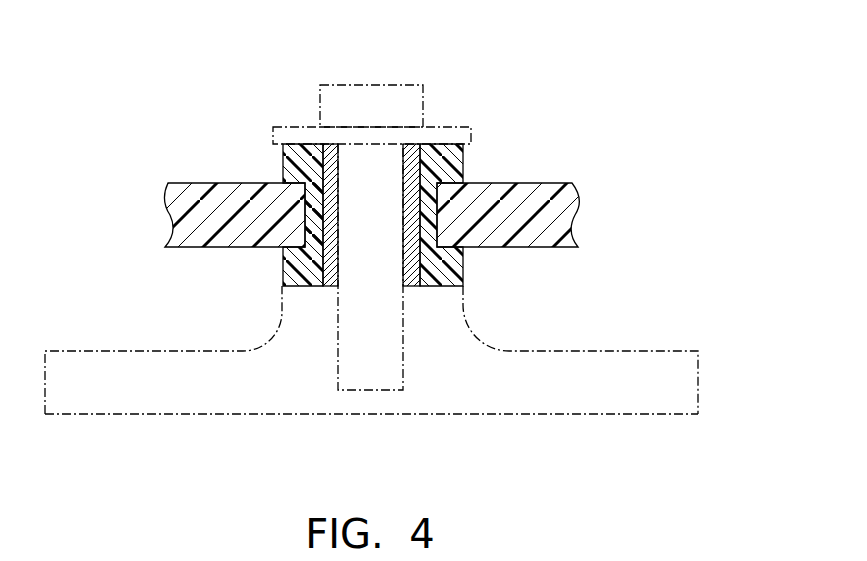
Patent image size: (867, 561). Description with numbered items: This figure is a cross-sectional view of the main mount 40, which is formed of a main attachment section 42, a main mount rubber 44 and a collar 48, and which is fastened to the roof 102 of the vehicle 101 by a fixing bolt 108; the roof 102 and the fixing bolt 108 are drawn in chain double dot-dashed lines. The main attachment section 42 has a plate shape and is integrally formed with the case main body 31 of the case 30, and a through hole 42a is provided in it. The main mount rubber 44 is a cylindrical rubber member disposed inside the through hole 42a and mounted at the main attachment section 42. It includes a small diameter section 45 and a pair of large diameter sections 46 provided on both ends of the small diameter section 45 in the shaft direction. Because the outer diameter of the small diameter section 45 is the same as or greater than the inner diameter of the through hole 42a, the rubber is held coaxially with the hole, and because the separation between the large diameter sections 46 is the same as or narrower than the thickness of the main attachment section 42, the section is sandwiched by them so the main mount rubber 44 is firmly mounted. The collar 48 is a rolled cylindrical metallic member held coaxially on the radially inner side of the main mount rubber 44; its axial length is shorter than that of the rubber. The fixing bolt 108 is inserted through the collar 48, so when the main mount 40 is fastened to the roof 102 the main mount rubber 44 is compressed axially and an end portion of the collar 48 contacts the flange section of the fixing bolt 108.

The main mount 40 is at (332, 172).
The fixing bolt 108 is at (373, 96).
The collar 48 is at (414, 145).
The large diameter section 46 is at (303, 160).
The main mount rubber 44 is at (280, 160).
The small diameter section 45 is at (313, 213).
The through hole 42a is at (438, 198).
The main attachment section 42 is at (530, 188).
The case main body 31 is at (188, 180).
The case 30 is at (208, 174).
The vehicle 101 is at (371, 393).
The roof 102 is at (168, 415).